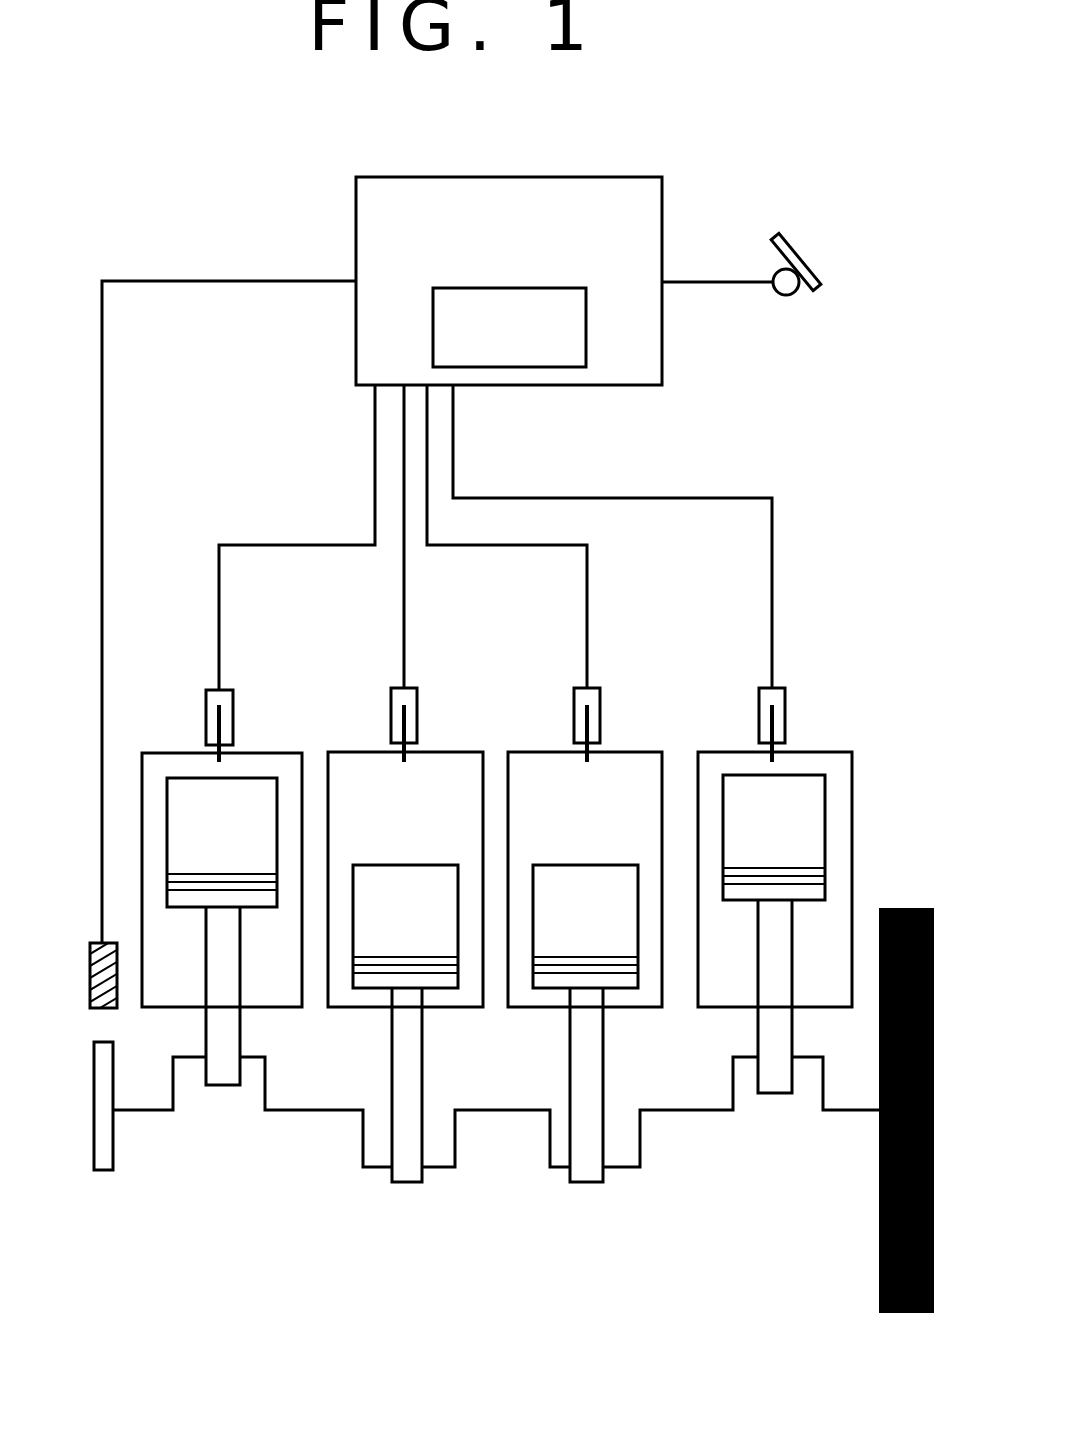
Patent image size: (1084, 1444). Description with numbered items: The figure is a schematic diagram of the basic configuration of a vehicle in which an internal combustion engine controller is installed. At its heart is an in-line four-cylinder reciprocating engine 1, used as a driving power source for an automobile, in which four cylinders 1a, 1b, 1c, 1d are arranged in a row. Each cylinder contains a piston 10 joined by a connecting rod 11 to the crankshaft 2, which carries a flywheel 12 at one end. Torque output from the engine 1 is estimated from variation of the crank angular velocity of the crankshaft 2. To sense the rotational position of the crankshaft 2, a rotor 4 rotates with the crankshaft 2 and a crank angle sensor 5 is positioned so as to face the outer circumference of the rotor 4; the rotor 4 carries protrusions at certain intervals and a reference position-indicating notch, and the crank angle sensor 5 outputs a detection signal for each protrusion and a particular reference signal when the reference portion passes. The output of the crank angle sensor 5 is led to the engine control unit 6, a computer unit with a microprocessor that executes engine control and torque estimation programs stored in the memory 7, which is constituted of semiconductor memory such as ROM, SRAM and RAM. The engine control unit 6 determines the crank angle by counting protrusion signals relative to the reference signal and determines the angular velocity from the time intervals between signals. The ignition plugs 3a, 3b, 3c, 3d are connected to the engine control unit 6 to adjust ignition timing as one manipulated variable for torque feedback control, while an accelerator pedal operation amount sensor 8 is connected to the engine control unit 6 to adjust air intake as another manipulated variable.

The engine 1 is at (838, 558).
The #1 cylinder 1a is at (222, 932).
The #2 cylinder 1b is at (368, 762).
The #3 cylinder 1c is at (548, 762).
The #4 cylinder 1d is at (780, 860).
The crankshaft 2 is at (468, 1115).
The ignition plug 3a is at (231, 696).
The ignition plug 3b is at (418, 696).
The ignition plug 3c is at (601, 696).
The ignition plug 3d is at (786, 696).
The rotor 4 is at (108, 1138).
The crank angle sensor 5 is at (97, 945).
The engine control unit 6 is at (388, 177).
The memory 7 is at (545, 367).
The accelerator pedal operation amount sensor 8 is at (788, 296).
The piston 10 is at (798, 810).
The connecting rod 11 is at (217, 1015).
The flywheel 12 is at (880, 1218).